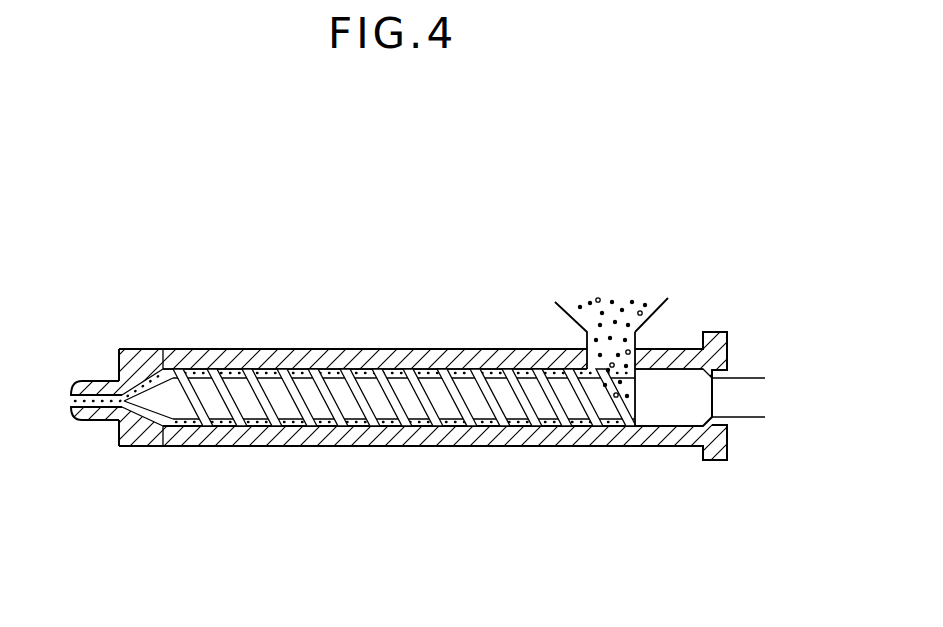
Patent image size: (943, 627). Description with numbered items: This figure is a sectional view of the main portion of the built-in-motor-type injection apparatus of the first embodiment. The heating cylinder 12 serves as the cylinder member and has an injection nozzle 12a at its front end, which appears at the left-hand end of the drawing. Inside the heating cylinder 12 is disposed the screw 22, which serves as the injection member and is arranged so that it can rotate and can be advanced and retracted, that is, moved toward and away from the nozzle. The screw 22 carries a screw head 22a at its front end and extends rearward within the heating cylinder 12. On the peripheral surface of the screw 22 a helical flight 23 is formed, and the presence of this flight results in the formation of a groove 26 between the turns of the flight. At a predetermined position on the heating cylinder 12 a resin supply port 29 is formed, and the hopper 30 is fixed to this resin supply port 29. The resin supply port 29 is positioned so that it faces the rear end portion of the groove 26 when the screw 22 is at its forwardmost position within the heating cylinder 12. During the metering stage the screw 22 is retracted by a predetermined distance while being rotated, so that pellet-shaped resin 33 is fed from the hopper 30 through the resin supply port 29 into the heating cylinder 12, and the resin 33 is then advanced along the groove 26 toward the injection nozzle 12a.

The heating cylinder 12 is at (229, 350).
The injection nozzle 12a is at (80, 381).
The screw 22 is at (305, 397).
The screw head 22a is at (165, 397).
The helical flight 23 is at (485, 372).
The groove 26 is at (383, 372).
The resin supply port 29 is at (637, 349).
The hopper 30 is at (652, 314).
The pellet-shaped resin 33 is at (602, 308).